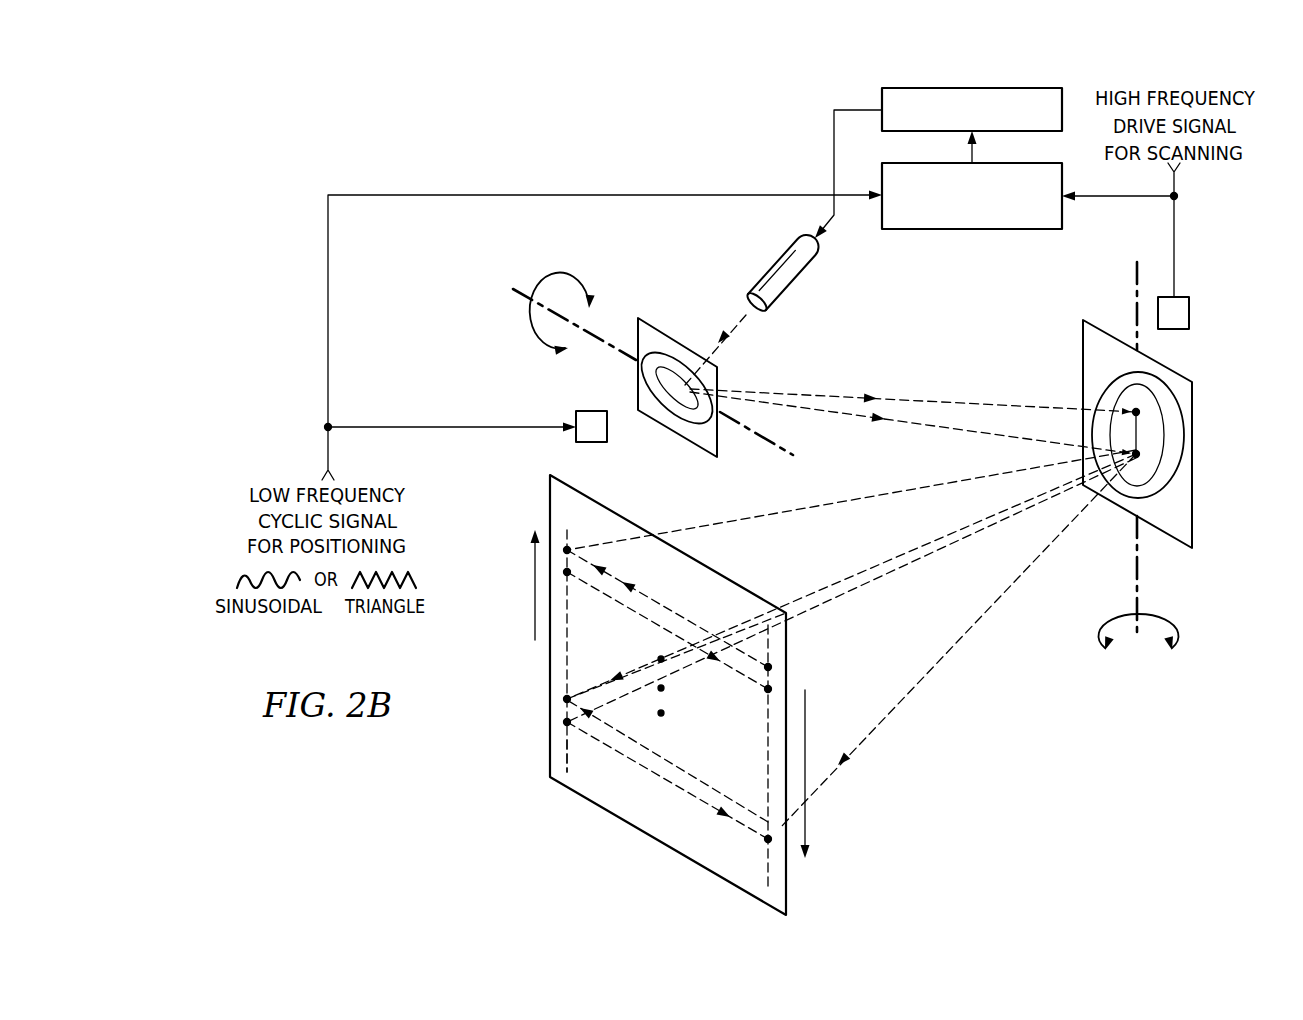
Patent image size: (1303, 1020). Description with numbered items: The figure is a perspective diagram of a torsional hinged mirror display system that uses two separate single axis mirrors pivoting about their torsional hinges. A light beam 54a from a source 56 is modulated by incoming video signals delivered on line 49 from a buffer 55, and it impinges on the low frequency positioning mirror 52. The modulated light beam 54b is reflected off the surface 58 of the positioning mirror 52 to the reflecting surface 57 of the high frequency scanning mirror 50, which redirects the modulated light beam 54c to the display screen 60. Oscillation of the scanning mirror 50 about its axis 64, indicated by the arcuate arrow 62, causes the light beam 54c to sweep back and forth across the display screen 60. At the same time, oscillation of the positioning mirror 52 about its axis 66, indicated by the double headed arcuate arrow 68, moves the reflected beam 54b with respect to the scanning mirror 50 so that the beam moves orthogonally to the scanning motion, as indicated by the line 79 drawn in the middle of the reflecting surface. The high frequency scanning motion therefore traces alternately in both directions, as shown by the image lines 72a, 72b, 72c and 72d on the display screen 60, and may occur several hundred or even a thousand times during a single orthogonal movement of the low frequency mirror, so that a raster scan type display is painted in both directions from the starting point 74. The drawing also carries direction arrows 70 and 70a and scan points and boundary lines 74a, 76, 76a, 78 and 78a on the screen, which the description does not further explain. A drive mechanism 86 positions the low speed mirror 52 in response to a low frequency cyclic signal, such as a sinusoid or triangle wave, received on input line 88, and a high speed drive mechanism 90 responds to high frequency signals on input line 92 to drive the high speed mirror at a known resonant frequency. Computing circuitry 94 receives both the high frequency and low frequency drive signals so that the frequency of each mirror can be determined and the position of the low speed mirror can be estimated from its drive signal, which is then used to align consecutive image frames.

The line 49 is at (834, 148).
The high frequency scanning single axis torsional hinged mirror 50 is at (1222, 435).
The low frequency positioning single axis torsional hinged mirror 52 is at (740, 372).
The light beam 54a is at (741, 321).
The modulated light beam 54b is at (845, 393).
The modulated light beam 54c is at (822, 590).
The buffer 55 is at (983, 88).
The source 56 is at (771, 262).
The reflecting surface 57 is at (1152, 458).
The reflecting surface 58 is at (687, 403).
The display screen 60 is at (685, 846).
The arcuate arrow 62 is at (1178, 632).
The axis 64 is at (1139, 577).
The axis 66 is at (776, 448).
The double headed arcuate arrow 68 is at (574, 277).
The scan direction arrow 70 is at (806, 820).
The return scan direction arrow 70a is at (533, 600).
The image line 72a is at (655, 590).
The image line 72b is at (652, 630).
The image line 72c is at (672, 760).
The image line 72d is at (630, 762).
The starting point 74 is at (772, 667).
The scan start point 74a is at (571, 576).
The scan start point 76 is at (572, 549).
The scan end point 76a is at (763, 689).
The right scan boundary 78 is at (767, 745).
The left scan boundary 78a is at (562, 750).
The line 79 is at (1142, 428).
The drive mechanism 86 is at (589, 411).
The input line 88 is at (328, 447).
The high speed drive mechanism 90 is at (1189, 312).
The input line 92 is at (1174, 243).
The computing circuitry 94 is at (983, 230).